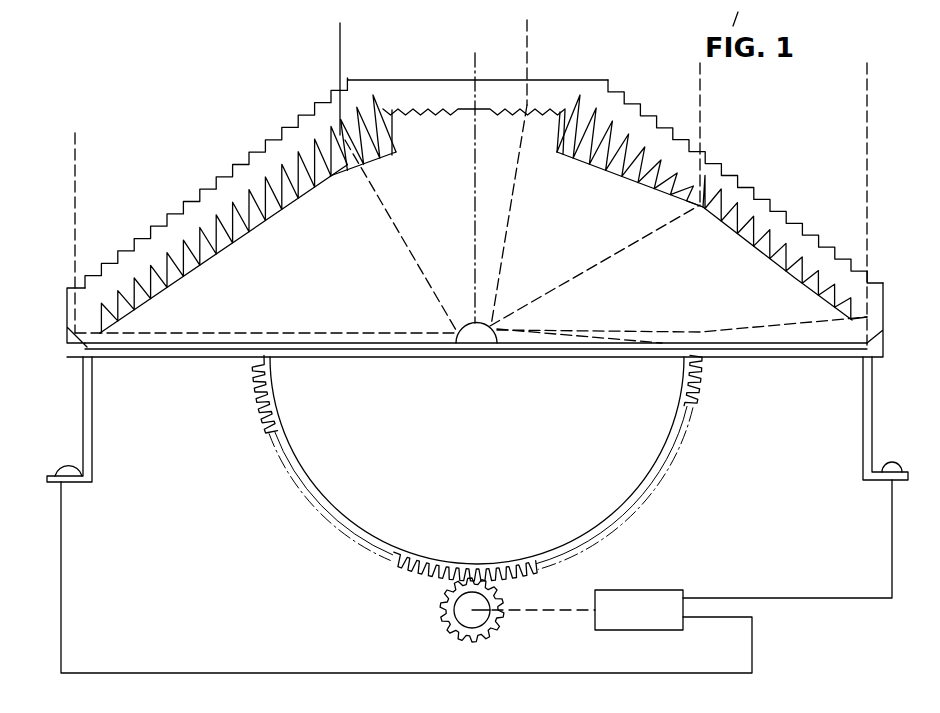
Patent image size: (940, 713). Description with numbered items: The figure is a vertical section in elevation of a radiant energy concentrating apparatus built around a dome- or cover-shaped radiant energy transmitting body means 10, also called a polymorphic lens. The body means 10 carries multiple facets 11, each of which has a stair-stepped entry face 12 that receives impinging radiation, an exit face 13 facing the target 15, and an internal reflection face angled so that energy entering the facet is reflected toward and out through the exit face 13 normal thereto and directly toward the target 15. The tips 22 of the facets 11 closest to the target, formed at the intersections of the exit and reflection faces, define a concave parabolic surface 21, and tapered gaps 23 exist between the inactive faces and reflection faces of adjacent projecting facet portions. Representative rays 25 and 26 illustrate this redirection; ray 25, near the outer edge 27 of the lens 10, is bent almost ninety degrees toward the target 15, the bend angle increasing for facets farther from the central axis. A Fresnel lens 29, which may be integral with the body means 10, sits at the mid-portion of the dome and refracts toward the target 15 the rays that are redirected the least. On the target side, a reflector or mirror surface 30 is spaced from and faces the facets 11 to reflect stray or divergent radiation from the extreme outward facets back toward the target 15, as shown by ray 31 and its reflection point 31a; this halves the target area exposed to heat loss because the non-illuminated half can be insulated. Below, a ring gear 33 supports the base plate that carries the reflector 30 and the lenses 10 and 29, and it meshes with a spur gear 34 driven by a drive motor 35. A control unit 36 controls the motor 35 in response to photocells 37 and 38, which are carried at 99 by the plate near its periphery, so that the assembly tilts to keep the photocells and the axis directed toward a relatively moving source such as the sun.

The radiant energy transmitting body means 10 is at (200, 101).
The facets 11 is at (693, 195).
The entry face 12 is at (205, 184).
The exit face 13 is at (226, 228).
The target 15 is at (483, 337).
The concave surface 21 is at (170, 278).
The tips 22 is at (312, 186).
The tapered gaps 23 is at (574, 158).
The ray 25 is at (75, 203).
The ray 26 is at (340, 50).
The outer edge 27 is at (58, 325).
The Fresnel lens 29 is at (415, 80).
The reflector or mirror surface 30 is at (554, 350).
The ray 31 is at (870, 133).
The reflection point 31a is at (661, 343).
The ring gear 33 is at (702, 383).
The spur gear 34 is at (437, 618).
The drive motor 35 is at (447, 598).
The control unit 36 is at (660, 598).
The photocell 37 is at (886, 456).
The photocell 38 is at (85, 460).
The photocell carrier location 99 is at (83, 426).